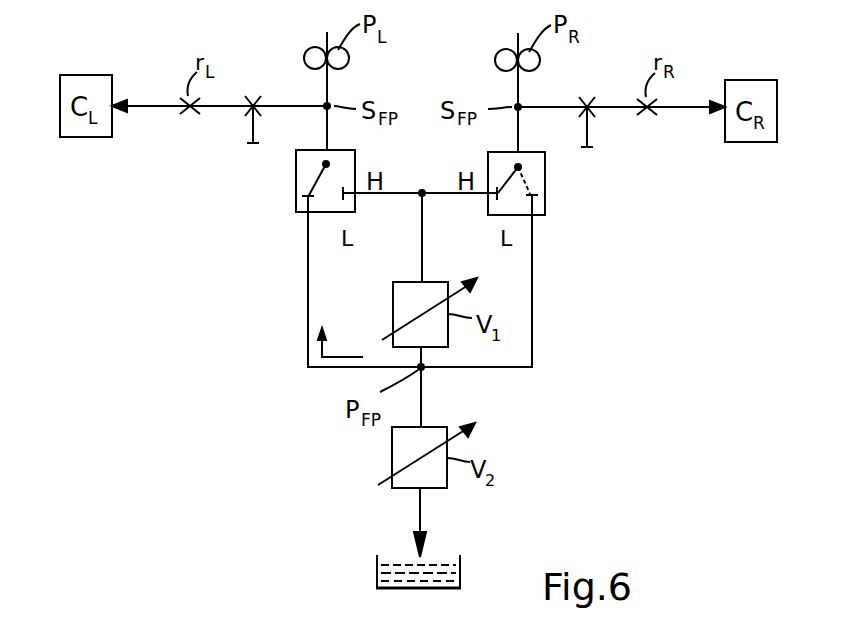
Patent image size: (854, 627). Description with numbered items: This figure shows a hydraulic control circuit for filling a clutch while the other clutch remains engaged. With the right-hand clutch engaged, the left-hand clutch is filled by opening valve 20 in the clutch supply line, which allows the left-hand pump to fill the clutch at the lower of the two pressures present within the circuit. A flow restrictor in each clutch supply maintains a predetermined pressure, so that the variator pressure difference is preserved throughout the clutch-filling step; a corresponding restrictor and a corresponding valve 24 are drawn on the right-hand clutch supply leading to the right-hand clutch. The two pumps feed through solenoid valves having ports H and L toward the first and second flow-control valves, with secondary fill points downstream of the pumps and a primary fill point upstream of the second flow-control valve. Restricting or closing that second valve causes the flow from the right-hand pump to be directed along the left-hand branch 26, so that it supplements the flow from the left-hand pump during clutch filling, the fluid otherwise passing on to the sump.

The valve 20 is at (253, 125).
The right relief/throttle valve 24 is at (587, 128).
The left-hand branch 26 is at (308, 297).